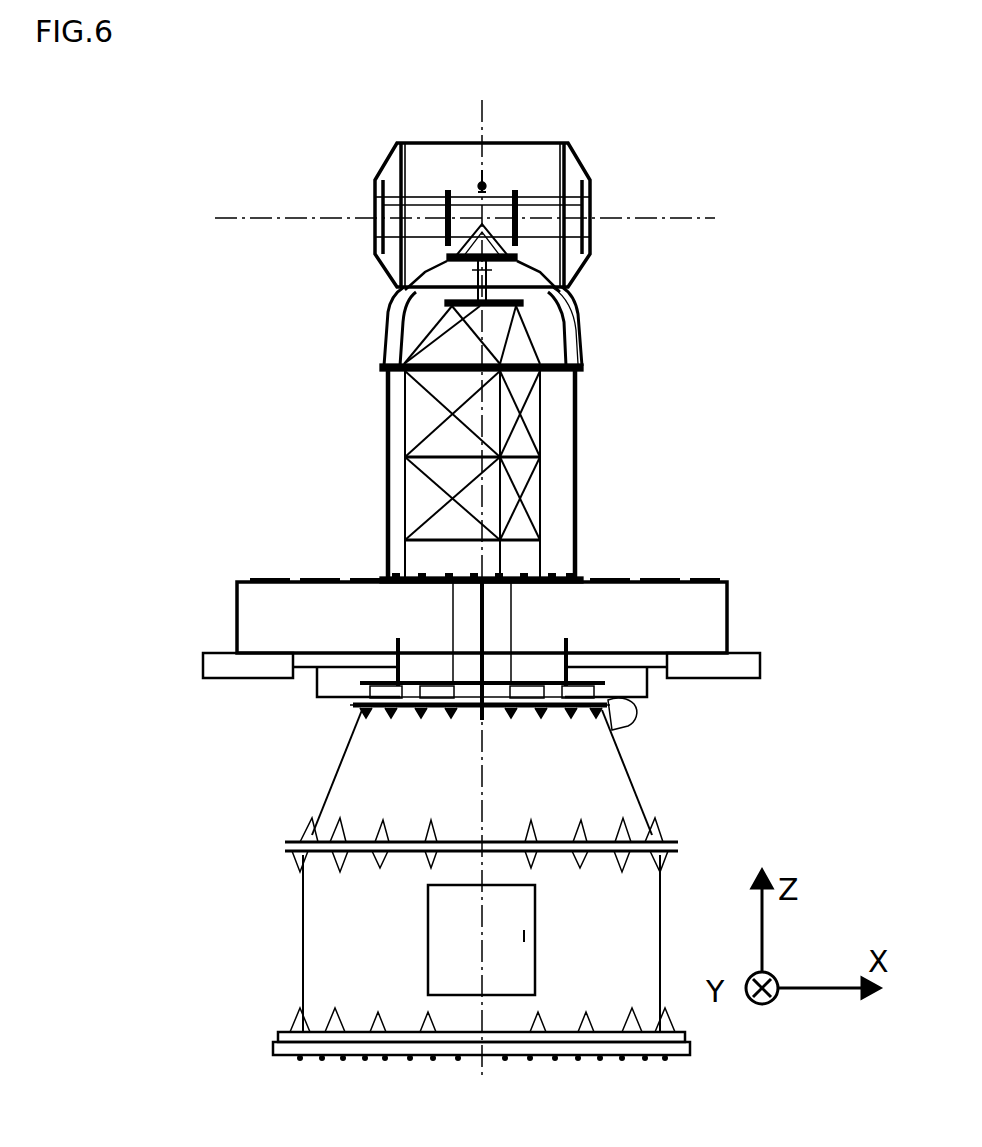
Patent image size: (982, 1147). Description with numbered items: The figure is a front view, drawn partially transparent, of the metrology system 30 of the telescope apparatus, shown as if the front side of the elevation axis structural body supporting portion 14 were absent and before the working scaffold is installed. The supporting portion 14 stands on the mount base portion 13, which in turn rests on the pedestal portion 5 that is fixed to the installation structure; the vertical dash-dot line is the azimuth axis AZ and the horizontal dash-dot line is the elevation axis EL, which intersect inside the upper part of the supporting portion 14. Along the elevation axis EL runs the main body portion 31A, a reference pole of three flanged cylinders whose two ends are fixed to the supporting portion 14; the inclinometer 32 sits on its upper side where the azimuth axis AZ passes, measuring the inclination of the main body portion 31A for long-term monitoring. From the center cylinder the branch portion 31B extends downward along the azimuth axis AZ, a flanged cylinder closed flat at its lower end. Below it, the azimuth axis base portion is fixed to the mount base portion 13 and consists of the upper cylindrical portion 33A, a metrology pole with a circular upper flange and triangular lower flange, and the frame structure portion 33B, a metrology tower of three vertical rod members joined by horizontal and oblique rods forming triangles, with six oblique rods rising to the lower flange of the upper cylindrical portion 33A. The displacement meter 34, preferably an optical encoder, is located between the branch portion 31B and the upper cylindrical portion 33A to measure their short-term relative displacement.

The metrology system 30 is at (268, 184).
The inclinometer 32 is at (478, 186).
The main body portion 31A is at (538, 232).
The branch portion 31B is at (545, 292).
The displacement meter 34 is at (440, 266).
The upper cylindrical portion 33A is at (440, 308).
The frame structure portion 33B is at (440, 418).
The elevation axis structural body supporting portion 14 is at (578, 480).
The mount base portion 13 is at (610, 577).
The pedestal portion 5 is at (590, 775).
The azimuth axis AZ is at (484, 122).
The elevation axis EL is at (645, 217).